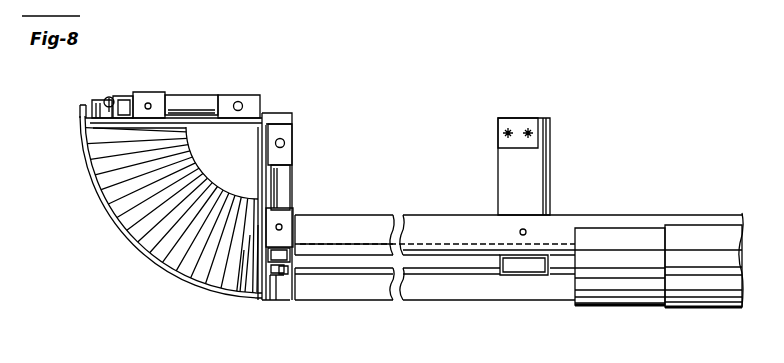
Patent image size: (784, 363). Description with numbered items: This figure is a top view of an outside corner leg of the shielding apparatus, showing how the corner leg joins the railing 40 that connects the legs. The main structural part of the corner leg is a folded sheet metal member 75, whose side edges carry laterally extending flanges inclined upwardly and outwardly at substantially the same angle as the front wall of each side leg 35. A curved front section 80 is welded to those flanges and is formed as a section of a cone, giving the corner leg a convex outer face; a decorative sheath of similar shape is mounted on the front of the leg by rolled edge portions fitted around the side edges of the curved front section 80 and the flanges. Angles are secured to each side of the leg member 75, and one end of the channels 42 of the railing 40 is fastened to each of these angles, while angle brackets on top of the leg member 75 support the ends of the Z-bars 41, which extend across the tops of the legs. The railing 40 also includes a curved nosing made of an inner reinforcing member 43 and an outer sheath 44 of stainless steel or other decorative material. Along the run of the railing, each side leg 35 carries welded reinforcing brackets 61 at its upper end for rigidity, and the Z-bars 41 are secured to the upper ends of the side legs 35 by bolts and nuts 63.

The side leg 35 is at (527, 190).
The railing 40 is at (656, 210).
The Z-bar 41 is at (421, 218).
The channel 42 is at (384, 290).
The inner reinforcing member 43 is at (625, 298).
The outer sheath 44 is at (718, 298).
The reinforcing bracket 61 is at (498, 130).
The bolts and nuts 63 is at (521, 229).
The folded sheet metal member 75 is at (262, 122).
The curved front section 80 is at (118, 215).